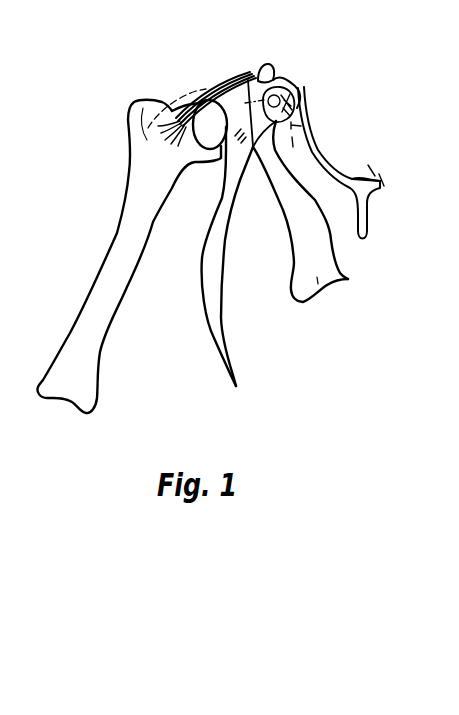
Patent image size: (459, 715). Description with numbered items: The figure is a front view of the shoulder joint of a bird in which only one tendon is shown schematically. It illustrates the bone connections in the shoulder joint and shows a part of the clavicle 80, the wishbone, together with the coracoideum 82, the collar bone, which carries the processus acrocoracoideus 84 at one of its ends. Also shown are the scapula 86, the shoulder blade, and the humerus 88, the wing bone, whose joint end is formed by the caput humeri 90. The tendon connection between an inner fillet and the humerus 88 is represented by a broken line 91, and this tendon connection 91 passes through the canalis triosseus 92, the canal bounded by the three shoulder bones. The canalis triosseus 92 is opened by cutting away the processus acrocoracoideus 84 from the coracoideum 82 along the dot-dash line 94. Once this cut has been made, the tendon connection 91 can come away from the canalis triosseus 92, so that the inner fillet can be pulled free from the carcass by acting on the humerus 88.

The clavicle 80 is at (328, 163).
The coracoideum 82 is at (301, 304).
The processus acrocoracoideus 84 is at (277, 78).
The scapula 86 is at (214, 296).
The humerus 88 is at (107, 272).
The caput humeri 90 is at (203, 95).
The tendon connection 91 is at (306, 123).
The canalis triosseus 92 is at (294, 96).
The dot-dash line 94 is at (255, 149).